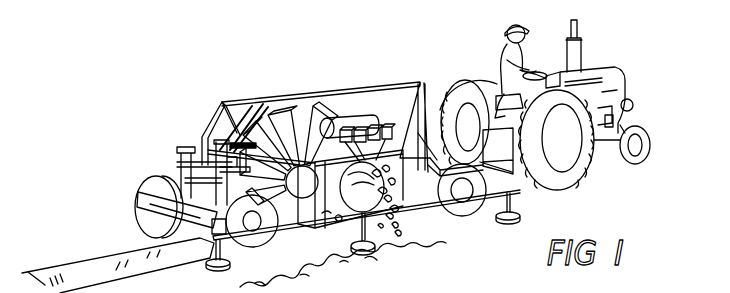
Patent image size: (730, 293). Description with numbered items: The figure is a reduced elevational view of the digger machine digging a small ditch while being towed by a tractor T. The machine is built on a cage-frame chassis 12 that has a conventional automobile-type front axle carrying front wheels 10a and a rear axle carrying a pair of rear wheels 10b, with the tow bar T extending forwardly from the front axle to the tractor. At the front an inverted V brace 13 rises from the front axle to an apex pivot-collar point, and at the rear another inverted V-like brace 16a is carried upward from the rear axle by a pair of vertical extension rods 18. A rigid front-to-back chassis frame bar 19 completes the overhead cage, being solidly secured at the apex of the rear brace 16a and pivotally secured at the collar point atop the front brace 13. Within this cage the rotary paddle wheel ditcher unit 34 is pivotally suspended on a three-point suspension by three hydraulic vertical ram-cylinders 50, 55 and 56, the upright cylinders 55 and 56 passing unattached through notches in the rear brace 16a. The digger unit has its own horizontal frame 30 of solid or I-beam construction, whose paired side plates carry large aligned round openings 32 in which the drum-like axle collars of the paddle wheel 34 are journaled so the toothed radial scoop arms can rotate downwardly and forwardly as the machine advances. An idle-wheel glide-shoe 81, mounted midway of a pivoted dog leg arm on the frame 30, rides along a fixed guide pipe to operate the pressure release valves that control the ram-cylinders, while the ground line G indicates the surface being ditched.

The front wheels 10a is at (479, 206).
The rear wheels 10b is at (133, 197).
The cage-frame chassis 12 is at (250, 97).
The inverted V brace 13 is at (430, 100).
The rear inverted V-like brace 16a is at (205, 133).
The vertical extension rods 18 is at (177, 177).
The front to back chassis frame bar 19 is at (365, 88).
The digger unit frame 30 is at (137, 218).
The round opening 32 is at (357, 213).
The paddle digger wheel 34 is at (335, 108).
The hydraulic vertical ram-cylinder 50 is at (440, 110).
The hydraulic vertical ram-cylinder 55 is at (213, 230).
The hydraulic vertical ram-cylinder 56 is at (178, 165).
The idle-wheel glide-shoe 81 is at (330, 215).
The ground G is at (420, 247).
The tow bar T is at (556, 105).